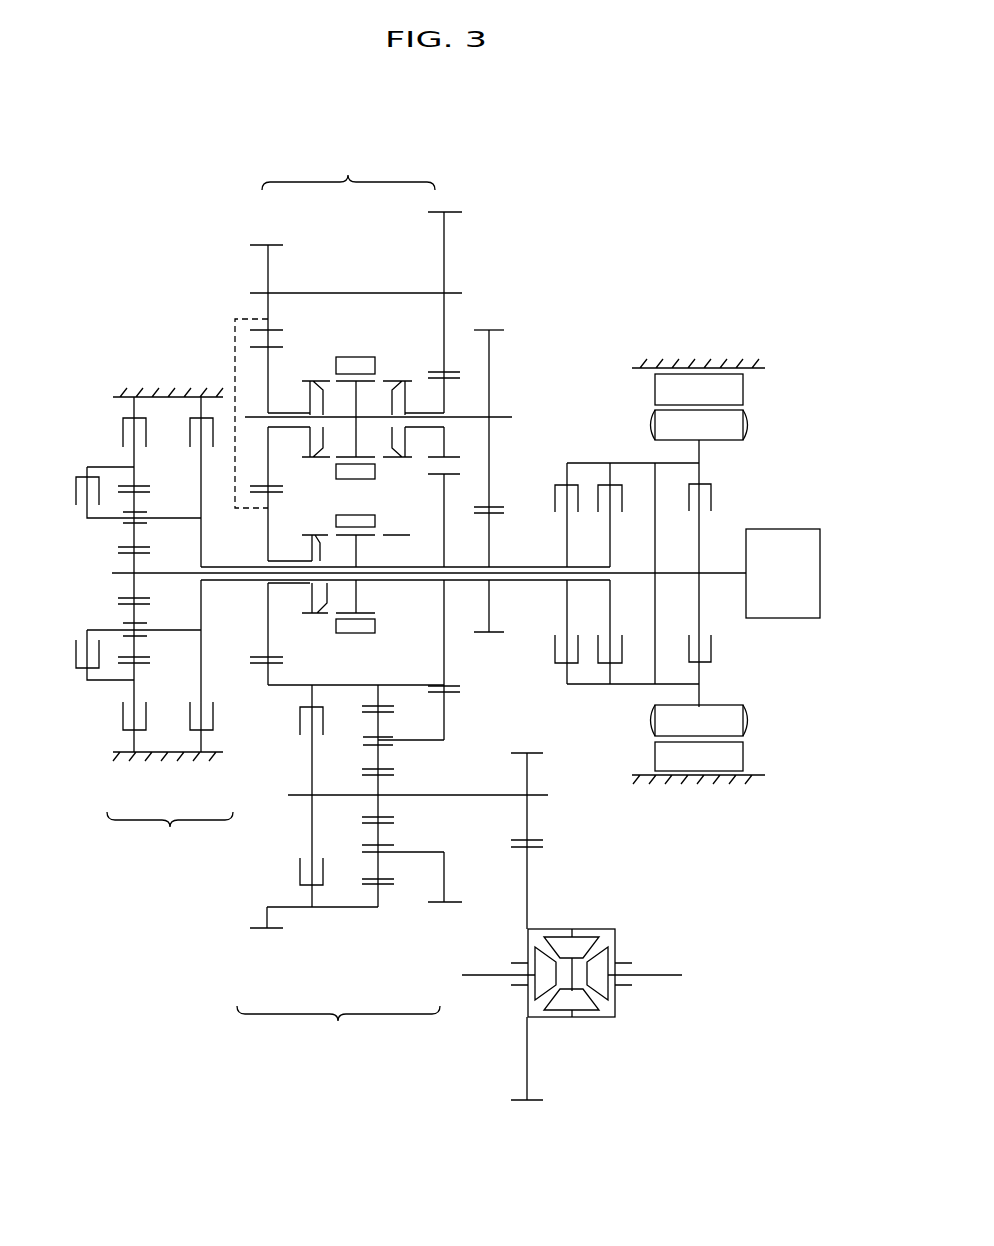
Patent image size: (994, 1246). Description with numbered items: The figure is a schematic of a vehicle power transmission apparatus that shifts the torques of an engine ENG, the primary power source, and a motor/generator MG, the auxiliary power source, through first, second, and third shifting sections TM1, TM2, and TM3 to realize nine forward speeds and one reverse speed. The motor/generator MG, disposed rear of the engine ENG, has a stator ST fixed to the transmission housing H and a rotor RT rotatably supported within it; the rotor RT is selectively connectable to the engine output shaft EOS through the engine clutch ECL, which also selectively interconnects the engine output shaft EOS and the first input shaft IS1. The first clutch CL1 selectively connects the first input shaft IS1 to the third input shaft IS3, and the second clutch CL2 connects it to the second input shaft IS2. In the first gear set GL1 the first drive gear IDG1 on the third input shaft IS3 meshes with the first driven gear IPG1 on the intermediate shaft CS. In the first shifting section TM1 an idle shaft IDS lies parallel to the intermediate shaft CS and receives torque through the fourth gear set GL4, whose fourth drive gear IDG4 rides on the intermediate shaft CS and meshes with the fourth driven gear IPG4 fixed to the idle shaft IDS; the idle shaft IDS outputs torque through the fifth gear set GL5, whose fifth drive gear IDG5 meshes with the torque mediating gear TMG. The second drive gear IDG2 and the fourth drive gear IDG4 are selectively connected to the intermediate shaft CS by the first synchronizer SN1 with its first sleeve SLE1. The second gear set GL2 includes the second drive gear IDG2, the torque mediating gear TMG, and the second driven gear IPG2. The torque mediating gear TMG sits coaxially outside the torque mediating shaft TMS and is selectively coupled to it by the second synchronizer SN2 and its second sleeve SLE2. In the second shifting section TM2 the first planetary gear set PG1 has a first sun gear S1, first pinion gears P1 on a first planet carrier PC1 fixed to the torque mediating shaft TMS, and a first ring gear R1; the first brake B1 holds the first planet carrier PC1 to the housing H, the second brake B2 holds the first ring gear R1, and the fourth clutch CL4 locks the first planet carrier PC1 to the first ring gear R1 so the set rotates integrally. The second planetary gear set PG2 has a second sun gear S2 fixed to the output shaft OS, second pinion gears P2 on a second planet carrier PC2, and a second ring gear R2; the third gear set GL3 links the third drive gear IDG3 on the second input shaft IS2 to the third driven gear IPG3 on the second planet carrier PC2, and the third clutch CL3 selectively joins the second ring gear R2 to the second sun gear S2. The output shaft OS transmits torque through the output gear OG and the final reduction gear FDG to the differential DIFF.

The first shifting section TM1 is at (348, 169).
The second shifting section TM2 is at (170, 834).
The third shifting section TM3 is at (338, 1028).
The first gear set GL1 is at (494, 323).
The second gear set GL2 is at (267, 936).
The third gear set GL3 is at (440, 910).
The fourth gear set GL4 is at (452, 205).
The fifth gear set GL5 is at (262, 240).
The first drive gear IDG1 is at (491, 540).
The second drive gear IDG2 is at (237, 336).
The third drive gear IDG3 is at (444, 668).
The fourth drive gear IDG4 is at (477, 394).
The fifth drive gear IDG5 is at (268, 270).
The first driven gear IPG1 is at (491, 357).
The second driven gear IPG2 is at (268, 677).
The third driven gear IPG3 is at (444, 720).
The fourth driven gear IPG4 is at (444, 238).
The idle shaft IDS is at (356, 293).
The first synchronizer SN1 is at (347, 356).
The second synchronizer SN2 is at (382, 521).
The first sleeve SLE1 is at (358, 357).
The second sleeve SLE2 is at (345, 504).
The first input shaft IS1 is at (404, 582).
The second input shaft IS2 is at (507, 582).
The third input shaft IS3 is at (541, 590).
The intermediate shaft CS is at (460, 441).
The torque mediating shaft TMS is at (233, 581).
The torque mediating gear TMG is at (268, 530).
The first planetary gear set PG1 is at (122, 535).
The second planetary gear set PG2 is at (381, 817).
The first ring gear R1 is at (150, 486).
The second ring gear R2 is at (385, 706).
The first pinion gears P1 is at (150, 512).
The second pinion gears P2 is at (372, 723).
The first planet carrier PC1 is at (175, 520).
The second planet carrier PC2 is at (427, 740).
The first sun gear S1 is at (122, 567).
The second sun gear S2 is at (370, 772).
The first brake B1 is at (176, 415).
The second brake B2 is at (118, 415).
The first clutch CL1 is at (557, 480).
The second clutch CL2 is at (602, 480).
The third clutch CL3 is at (300, 740).
The fourth clutch CL4 is at (84, 475).
The transmission housing H is at (203, 395).
The motor/generator MG is at (727, 572).
The stator ST is at (699, 572).
The rotor RT is at (699, 573).
The engine clutch ECL is at (716, 494).
The engine output shaft EOS is at (718, 576).
The engine ENG is at (783, 573).
The output shaft OS is at (472, 798).
The output gear OG is at (528, 818).
The final reduction gear FDG is at (529, 892).
The differential DIFF is at (620, 940).